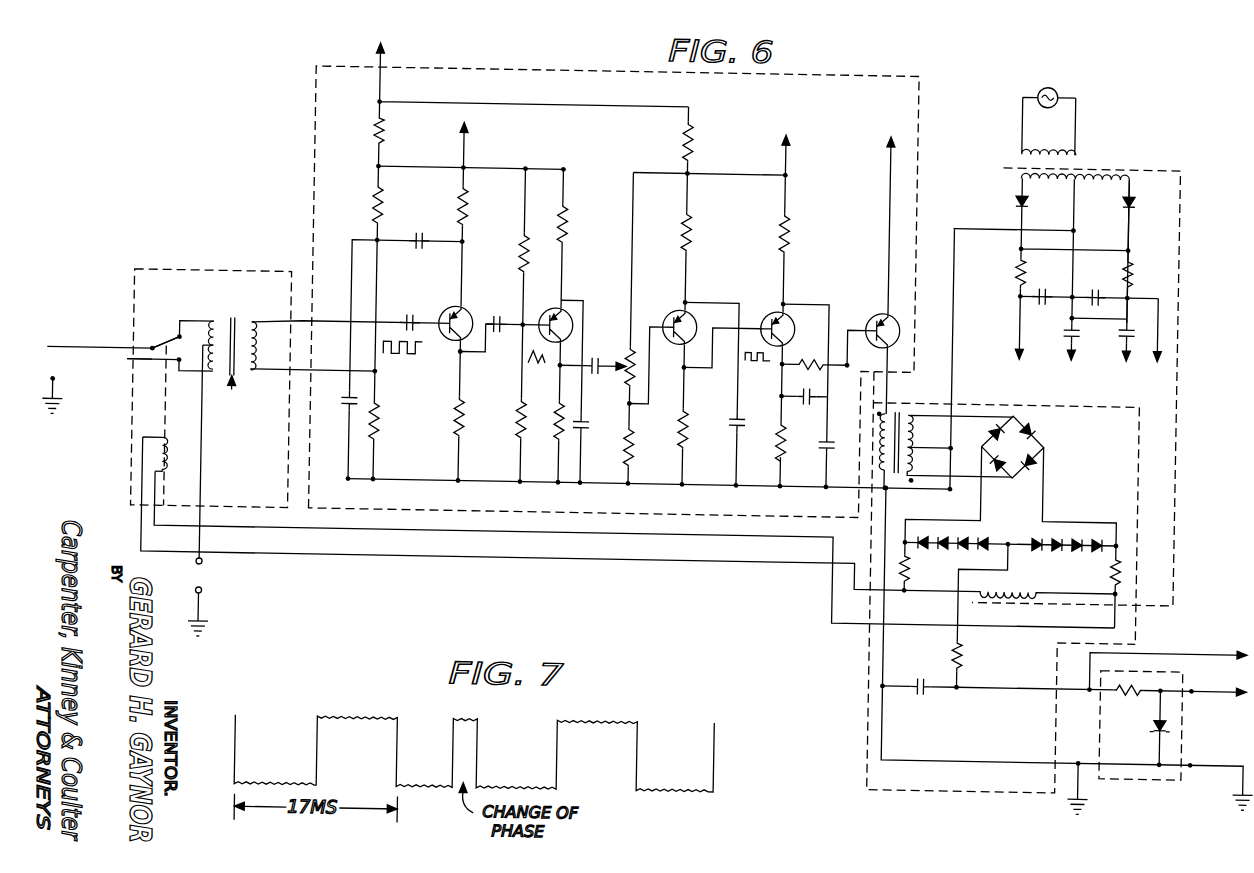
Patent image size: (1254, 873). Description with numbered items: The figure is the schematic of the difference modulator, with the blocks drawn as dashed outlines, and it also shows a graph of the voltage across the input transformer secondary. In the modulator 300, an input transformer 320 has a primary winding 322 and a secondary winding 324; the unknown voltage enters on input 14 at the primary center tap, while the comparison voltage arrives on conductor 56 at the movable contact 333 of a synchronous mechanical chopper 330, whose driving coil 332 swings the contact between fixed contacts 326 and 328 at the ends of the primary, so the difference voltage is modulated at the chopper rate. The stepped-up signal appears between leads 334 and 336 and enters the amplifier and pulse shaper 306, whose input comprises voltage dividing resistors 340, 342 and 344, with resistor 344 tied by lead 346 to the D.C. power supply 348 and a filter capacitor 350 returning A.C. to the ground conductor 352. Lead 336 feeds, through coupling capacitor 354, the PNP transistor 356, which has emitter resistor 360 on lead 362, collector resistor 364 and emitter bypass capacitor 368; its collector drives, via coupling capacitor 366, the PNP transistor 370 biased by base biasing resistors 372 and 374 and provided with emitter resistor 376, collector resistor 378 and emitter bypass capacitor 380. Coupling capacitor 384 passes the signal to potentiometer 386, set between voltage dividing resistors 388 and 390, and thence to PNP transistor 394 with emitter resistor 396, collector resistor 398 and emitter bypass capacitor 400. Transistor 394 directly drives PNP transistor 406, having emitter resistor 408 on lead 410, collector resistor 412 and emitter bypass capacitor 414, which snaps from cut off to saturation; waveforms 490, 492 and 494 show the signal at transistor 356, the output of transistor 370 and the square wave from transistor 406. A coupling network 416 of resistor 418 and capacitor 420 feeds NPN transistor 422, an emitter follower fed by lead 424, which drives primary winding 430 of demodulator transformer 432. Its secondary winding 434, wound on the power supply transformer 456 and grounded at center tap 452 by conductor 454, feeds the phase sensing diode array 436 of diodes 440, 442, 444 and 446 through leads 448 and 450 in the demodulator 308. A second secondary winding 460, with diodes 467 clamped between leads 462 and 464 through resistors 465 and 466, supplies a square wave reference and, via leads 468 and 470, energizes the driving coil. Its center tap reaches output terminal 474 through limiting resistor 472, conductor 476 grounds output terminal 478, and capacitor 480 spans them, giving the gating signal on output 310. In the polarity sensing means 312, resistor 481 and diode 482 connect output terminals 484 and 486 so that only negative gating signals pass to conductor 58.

The input 14 is at (204, 542).
The conductor 56 is at (78, 351).
The conductor 58 is at (1215, 678).
The modulator 300 is at (196, 272).
The amplifier and pulse shaper 306 is at (908, 72).
The demodulator 308 is at (958, 781).
The output 310 is at (1196, 640).
The polarity sensing means 312 is at (1140, 768).
The input transformer 320 is at (231, 350).
The primary winding 322 is at (210, 321).
The secondary winding 324 is at (251, 352).
The fixed contact 326 is at (172, 339).
The fixed contact 328 is at (152, 360).
The synchronous mechanical chopper 330 is at (150, 372).
The driving coil 332 is at (166, 446).
The movable contact 333 is at (175, 339).
The lead 334 is at (270, 373).
The lead 336 is at (327, 322).
The voltage dividing resistor 340 is at (380, 203).
The voltage dividing resistor 342 is at (380, 430).
The voltage dividing resistor 344 is at (380, 131).
The lead 346 is at (378, 90).
The D.C. power supply 348 is at (1008, 145).
The filter capacitor 350 is at (350, 410).
The ground conductor 352 is at (484, 483).
The coupling capacitor 354 is at (414, 318).
The PNP transistor 356 is at (457, 312).
The emitter resistor 360 is at (465, 205).
The lead 362 is at (462, 151).
The collector resistor 364 is at (455, 412).
The coupling capacitor 366 is at (494, 333).
The emitter bypass capacitor 368 is at (407, 246).
The PNP transistor 370 is at (556, 306).
The base biasing resistor 372 is at (514, 258).
The base biasing resistor 374 is at (516, 415).
The emitter resistor 376 is at (565, 222).
The collector resistor 378 is at (556, 432).
The emitter bypass capacitor 380 is at (582, 432).
The coupling capacitor 384 is at (594, 370).
The potentiometer 386 is at (624, 345).
The voltage dividing resistor 388 is at (690, 138).
The voltage dividing resistor 390 is at (634, 452).
The PNP transistor 394 is at (686, 312).
The emitter resistor 396 is at (688, 231).
The collector resistor 398 is at (680, 418).
The emitter bypass capacitor 400 is at (734, 410).
The PNP transistor 406 is at (770, 304).
The emitter resistor 408 is at (787, 229).
The lead 410 is at (784, 151).
The collector resistor 412 is at (776, 438).
The emitter bypass capacitor 414 is at (823, 442).
The coupling network 416 is at (808, 346).
The resistor 418 is at (824, 359).
The capacitor 420 is at (805, 398).
The NPN transistor 422 is at (868, 306).
The lead 424 is at (880, 210).
The primary winding 430 is at (882, 454).
The demodulator transformer 432 is at (900, 396).
The secondary winding 434 is at (904, 442).
The phase sensing diode array 436 is at (1054, 432).
The diode 440 is at (1030, 418).
The diode 442 is at (994, 420).
The diode 444 is at (1007, 455).
The diode 446 is at (1024, 462).
The lead 448 is at (952, 394).
The lead 450 is at (960, 468).
The center tap 452 is at (931, 438).
The conductor 454 is at (949, 355).
The power supply transformer 456 is at (1082, 158).
The second secondary winding 460 is at (1015, 578).
The lead 462 is at (1068, 512).
The lead 464 is at (984, 503).
The resistor 465 is at (1110, 562).
The resistor 466 is at (910, 560).
The diodes 467 is at (975, 540).
The lead 468 is at (462, 532).
The lead 470 is at (622, 558).
The limiting resistor 472 is at (966, 648).
The output terminal 474 is at (1093, 680).
The conductor 476 is at (938, 751).
The output terminal 478 is at (1080, 771).
The capacitor 480 is at (923, 670).
The resistor 481 is at (1120, 682).
The diode 482 is at (1158, 718).
The output terminal 484 is at (1194, 676).
The output terminal 486 is at (1196, 749).
The waveform 490 is at (405, 356).
The waveform 492 is at (536, 366).
The waveform 494 is at (752, 356).